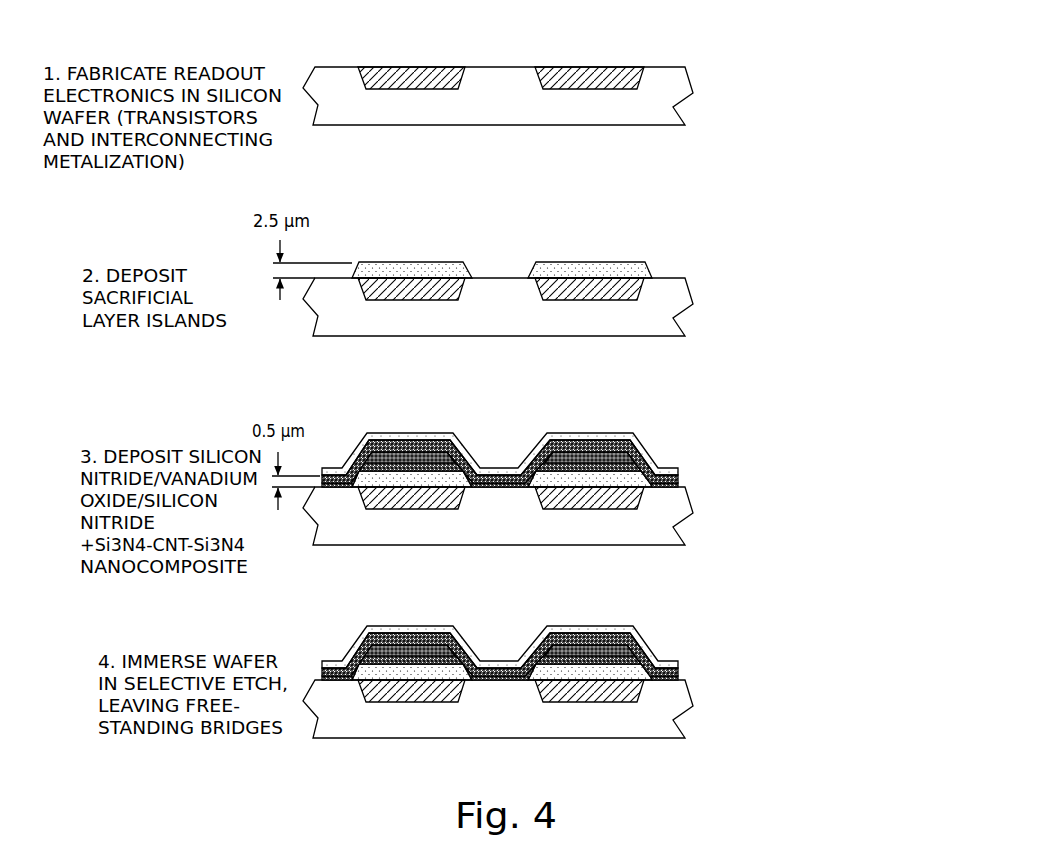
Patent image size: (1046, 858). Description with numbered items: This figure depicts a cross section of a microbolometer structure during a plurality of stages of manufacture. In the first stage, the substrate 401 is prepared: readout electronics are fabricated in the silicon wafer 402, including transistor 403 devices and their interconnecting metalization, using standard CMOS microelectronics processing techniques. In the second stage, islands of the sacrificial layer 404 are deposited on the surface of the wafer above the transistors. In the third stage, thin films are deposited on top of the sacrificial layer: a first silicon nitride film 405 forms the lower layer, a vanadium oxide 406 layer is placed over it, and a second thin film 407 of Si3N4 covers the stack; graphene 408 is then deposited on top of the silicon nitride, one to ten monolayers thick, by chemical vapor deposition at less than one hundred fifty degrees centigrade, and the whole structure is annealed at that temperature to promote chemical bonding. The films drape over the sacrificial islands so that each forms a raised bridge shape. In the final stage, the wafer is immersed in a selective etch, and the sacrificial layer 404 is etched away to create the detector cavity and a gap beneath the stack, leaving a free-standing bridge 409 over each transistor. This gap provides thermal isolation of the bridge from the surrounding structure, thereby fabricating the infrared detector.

The substrate 401 is at (607, 62).
The silicon wafer 402 is at (667, 65).
The transistor 403 is at (414, 66).
The sacrificial layer 404 is at (629, 243).
The Si3N4 thin film 405 is at (683, 488).
The vanadium oxide layer 406 is at (396, 447).
The thin film 407 is at (681, 477).
The graphene 408 is at (648, 442).
The free-standing bridge 409 is at (641, 639).